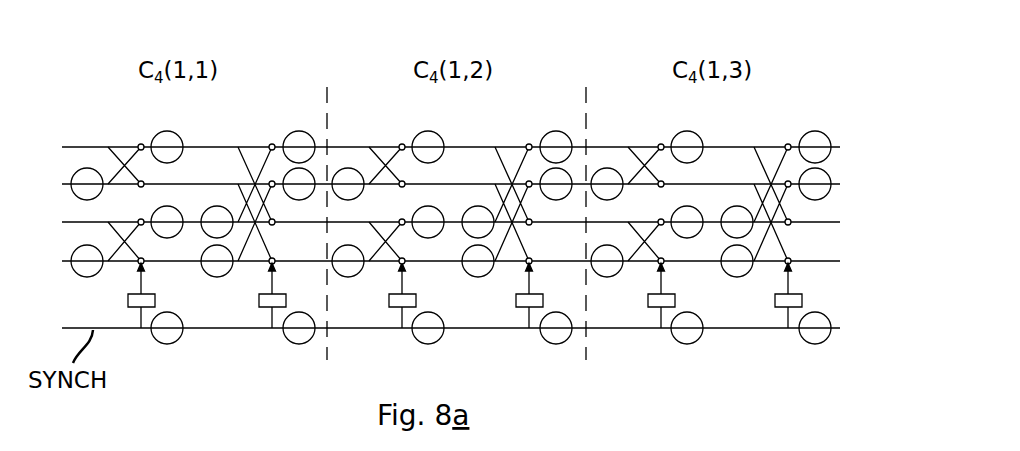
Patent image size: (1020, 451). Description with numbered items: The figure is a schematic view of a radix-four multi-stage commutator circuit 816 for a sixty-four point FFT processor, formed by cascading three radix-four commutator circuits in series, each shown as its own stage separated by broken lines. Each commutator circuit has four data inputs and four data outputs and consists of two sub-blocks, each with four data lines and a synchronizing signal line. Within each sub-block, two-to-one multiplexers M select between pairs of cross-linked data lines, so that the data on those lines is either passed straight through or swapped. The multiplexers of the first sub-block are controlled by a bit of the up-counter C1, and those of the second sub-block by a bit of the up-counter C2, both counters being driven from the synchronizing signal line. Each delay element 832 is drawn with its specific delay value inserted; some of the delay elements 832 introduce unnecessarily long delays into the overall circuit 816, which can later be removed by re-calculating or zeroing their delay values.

The radix-4 multi-stage commutator circuit 816 is at (445, 199).
The delay element 832 is at (154, 139).
The multiplexer M is at (273, 143).
The up-counter C1 is at (128, 299).
The up-counter C2 is at (777, 300).